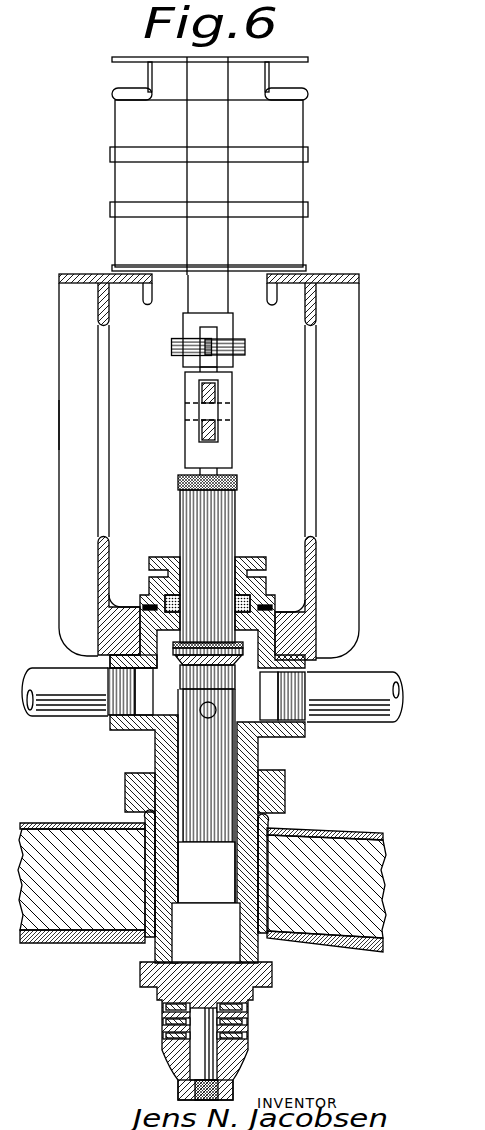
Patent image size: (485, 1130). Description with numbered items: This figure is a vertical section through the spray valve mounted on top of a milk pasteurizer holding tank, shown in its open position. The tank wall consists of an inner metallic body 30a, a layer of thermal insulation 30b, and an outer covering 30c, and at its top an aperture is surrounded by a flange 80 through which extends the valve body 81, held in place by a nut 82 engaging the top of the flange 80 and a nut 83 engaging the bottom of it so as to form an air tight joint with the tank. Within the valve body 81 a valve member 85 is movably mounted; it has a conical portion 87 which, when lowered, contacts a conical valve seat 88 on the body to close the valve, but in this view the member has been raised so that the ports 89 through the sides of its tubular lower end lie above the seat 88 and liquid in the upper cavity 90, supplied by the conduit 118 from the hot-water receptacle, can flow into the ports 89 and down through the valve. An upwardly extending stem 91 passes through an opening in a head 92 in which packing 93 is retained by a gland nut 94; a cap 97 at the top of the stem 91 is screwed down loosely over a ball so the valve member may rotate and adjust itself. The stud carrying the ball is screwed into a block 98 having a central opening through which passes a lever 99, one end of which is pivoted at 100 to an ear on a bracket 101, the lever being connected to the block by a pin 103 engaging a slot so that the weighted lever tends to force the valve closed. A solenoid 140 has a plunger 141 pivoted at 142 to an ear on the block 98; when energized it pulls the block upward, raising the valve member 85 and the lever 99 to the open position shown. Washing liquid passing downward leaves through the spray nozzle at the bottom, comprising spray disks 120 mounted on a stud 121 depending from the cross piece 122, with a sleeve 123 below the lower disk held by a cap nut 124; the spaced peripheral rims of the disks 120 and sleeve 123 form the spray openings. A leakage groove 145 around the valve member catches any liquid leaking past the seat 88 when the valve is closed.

The solenoid 140 is at (305, 124).
The plunger 141 is at (225, 300).
The pivot 142 is at (237, 357).
The lever 99 is at (217, 396).
The pin 103 is at (215, 416).
The block 98 is at (225, 455).
The cap 97 is at (237, 484).
The stem 91 is at (232, 530).
The gland nut 94 is at (263, 562).
The head 92 is at (250, 574).
The packing 93 is at (252, 601).
The bracket 101 is at (317, 427).
The pivot 100 is at (29, 425).
The upper cavity 90 is at (100, 664).
The leakage groove 145 is at (165, 684).
The conduit 118 is at (68, 708).
The conical valve seat 88 is at (200, 714).
The conical portion 87 is at (233, 672).
The ports 89 is at (156, 738).
The nut 82 is at (284, 785).
The outer covering 30c is at (75, 808).
The valve body 81 is at (245, 848).
The flange 80 is at (263, 852).
The valve member 85 is at (211, 840).
The cross piece 122 is at (185, 941).
The inner metallic body 30a is at (55, 942).
The layer of thermal insulation 30b is at (355, 920).
The nut 83 is at (262, 980).
The spray disks 120 is at (250, 1008).
The stud 121 is at (207, 1044).
The sleeve 123 is at (248, 1050).
The cap nut 124 is at (230, 1088).